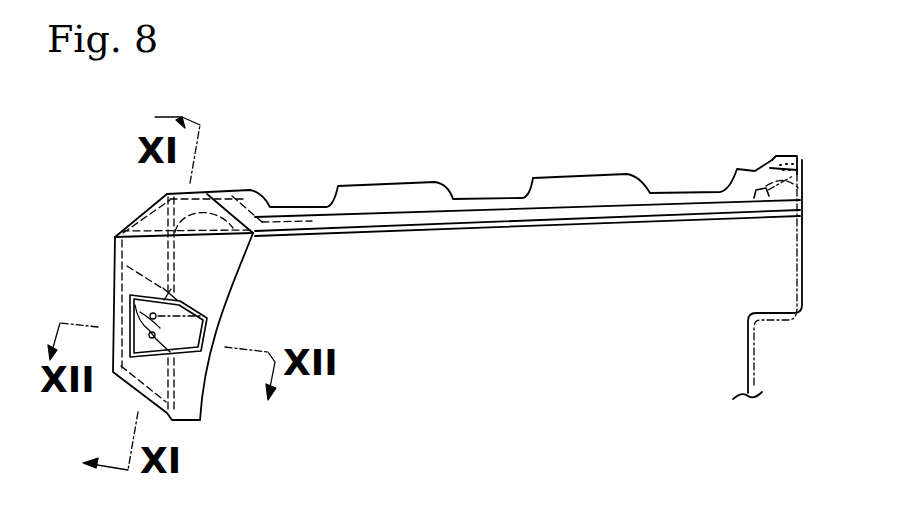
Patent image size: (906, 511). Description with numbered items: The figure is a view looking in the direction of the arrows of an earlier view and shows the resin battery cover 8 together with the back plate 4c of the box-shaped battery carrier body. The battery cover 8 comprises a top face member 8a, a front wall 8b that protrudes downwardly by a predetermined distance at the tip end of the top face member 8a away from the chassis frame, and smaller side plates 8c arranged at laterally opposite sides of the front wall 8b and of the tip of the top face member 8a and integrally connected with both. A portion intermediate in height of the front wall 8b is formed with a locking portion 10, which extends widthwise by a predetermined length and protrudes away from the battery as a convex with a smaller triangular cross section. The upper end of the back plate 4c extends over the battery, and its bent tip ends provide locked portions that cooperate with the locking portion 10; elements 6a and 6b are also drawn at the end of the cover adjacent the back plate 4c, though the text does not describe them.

The battery cover 8 is at (477, 182).
The top face member 8a is at (380, 187).
The front wall 8b is at (113, 268).
The smaller side plates 8c is at (217, 278).
The locking portion 10 is at (145, 317).
The mounting flange 6a is at (763, 200).
The mounting bracket 6b is at (772, 160).
The back plate 4c is at (750, 375).